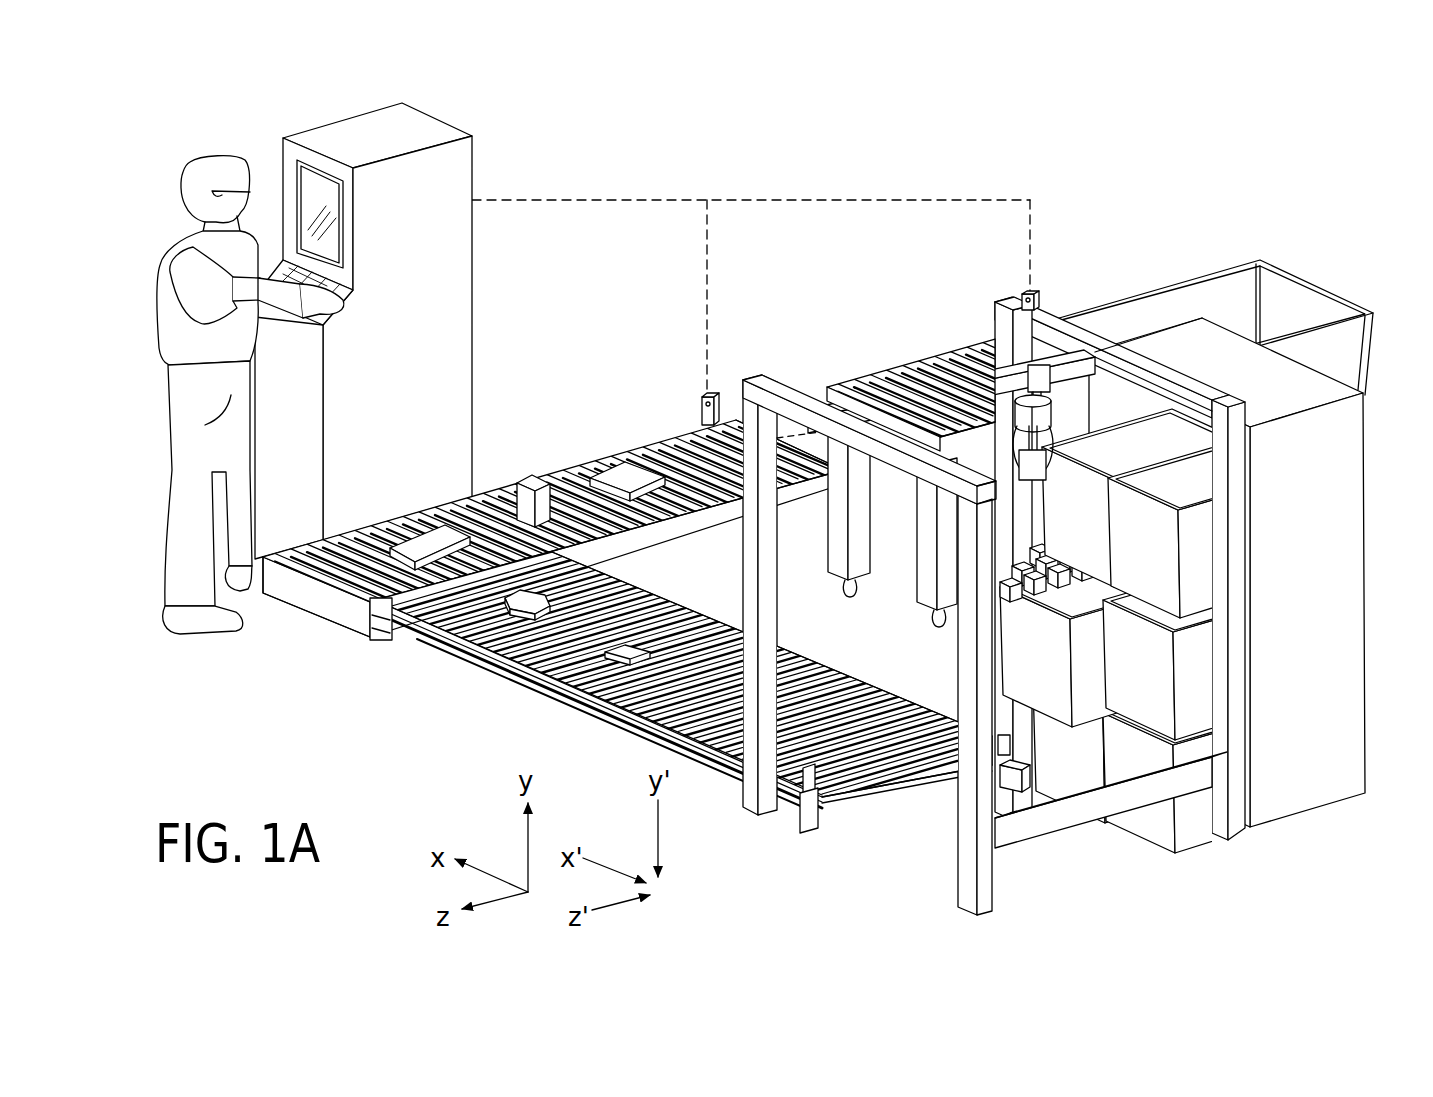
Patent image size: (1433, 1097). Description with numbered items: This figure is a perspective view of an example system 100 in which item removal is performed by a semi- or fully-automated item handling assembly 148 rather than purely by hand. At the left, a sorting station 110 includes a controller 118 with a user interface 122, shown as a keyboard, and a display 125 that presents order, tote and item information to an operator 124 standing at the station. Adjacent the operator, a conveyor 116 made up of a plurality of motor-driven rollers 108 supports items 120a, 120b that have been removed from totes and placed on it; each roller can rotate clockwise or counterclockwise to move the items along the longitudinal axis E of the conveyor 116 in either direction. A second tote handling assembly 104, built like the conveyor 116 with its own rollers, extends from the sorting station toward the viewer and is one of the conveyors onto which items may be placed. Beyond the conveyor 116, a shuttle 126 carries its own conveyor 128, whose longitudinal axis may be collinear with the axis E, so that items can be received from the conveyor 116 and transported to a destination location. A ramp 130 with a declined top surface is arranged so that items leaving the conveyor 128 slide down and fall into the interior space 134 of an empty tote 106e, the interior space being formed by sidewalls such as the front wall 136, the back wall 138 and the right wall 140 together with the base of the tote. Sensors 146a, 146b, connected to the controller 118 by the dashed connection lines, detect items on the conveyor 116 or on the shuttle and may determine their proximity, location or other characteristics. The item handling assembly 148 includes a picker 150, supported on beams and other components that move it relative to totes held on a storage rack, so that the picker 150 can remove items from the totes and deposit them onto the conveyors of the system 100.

The system 100 is at (124, 110).
The second tote handling assembly 104 is at (888, 810).
The empty tote 106e is at (1297, 273).
The rollers 108 is at (684, 469).
The sorting station 110 is at (308, 628).
The conveyor 116 is at (714, 390).
The controller 118 is at (406, 317).
The item 120a is at (538, 478).
The item 120b is at (610, 470).
The user interface 122 is at (350, 295).
The operator 124 is at (208, 638).
The display 125 is at (297, 172).
The shuttle 126 is at (914, 290).
The conveyor 128 is at (866, 378).
The ramp 130 is at (1084, 312).
The interior space 134 is at (1225, 273).
The front wall 136 is at (1320, 368).
The back wall 138 is at (1186, 283).
The right wall 140 is at (1372, 342).
The sensor 146a is at (704, 397).
The sensor 146b is at (1026, 296).
The item handling assembly 148 is at (1102, 872).
The picker 150 is at (1015, 418).
The longitudinal axis E is at (803, 432).